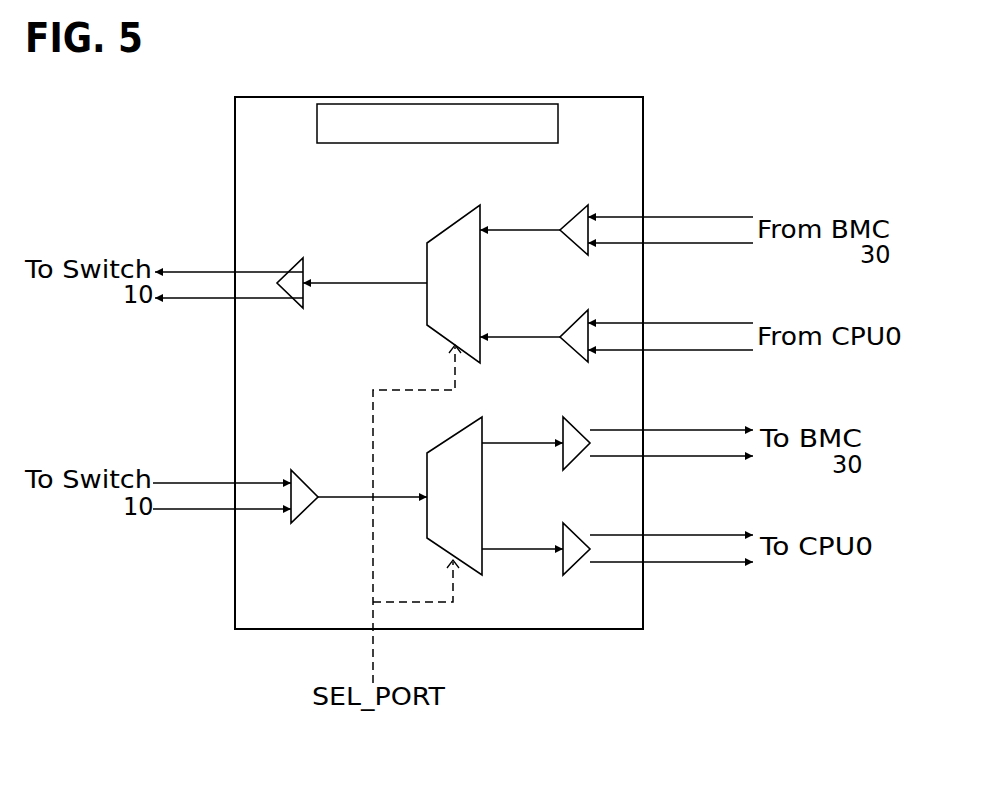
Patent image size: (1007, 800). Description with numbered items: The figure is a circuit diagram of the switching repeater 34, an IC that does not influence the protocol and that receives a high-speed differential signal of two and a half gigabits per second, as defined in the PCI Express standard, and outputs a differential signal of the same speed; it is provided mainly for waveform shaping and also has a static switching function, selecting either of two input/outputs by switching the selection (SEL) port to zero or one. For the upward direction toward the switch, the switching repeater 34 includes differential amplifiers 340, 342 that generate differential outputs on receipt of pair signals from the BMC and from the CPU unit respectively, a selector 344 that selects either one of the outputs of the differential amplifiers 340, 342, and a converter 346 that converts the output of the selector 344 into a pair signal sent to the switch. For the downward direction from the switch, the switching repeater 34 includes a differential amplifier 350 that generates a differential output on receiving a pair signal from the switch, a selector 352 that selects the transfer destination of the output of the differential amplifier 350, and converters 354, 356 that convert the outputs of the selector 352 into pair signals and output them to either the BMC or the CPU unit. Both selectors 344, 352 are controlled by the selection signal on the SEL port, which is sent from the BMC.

The switching repeater 34 is at (635, 123).
The differential amplifier 340 is at (583, 215).
The differential amplifier 342 is at (583, 320).
The selector 344 is at (470, 227).
The converter 346 is at (298, 262).
The differential amplifier 350 is at (295, 518).
The selector 352 is at (470, 563).
The converter 354 is at (565, 425).
The converter 356 is at (567, 565).